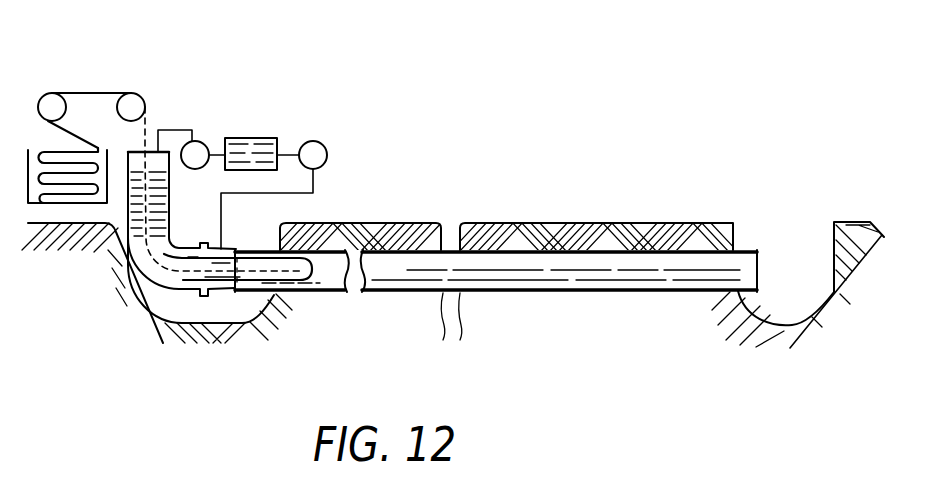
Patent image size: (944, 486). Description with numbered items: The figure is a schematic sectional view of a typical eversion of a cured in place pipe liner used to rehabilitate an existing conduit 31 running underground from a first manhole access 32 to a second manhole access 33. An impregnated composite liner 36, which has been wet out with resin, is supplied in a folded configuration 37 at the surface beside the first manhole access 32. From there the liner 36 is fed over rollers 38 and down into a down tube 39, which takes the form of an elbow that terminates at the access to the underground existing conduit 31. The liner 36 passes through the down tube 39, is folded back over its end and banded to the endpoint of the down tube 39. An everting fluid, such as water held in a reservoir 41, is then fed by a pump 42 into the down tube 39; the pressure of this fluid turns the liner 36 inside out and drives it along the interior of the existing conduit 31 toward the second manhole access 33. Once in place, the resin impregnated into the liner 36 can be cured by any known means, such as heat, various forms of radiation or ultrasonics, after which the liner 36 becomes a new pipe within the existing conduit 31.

The existing conduit 31 is at (490, 295).
The first manhole access 32 is at (212, 315).
The second manhole access 33 is at (787, 321).
The impregnated composite liner 36 is at (96, 92).
The folded configuration 37 is at (77, 205).
The rollers 38 is at (133, 100).
The down tube 39 is at (135, 283).
The reservoir 41 is at (252, 137).
The pump 42 is at (197, 166).